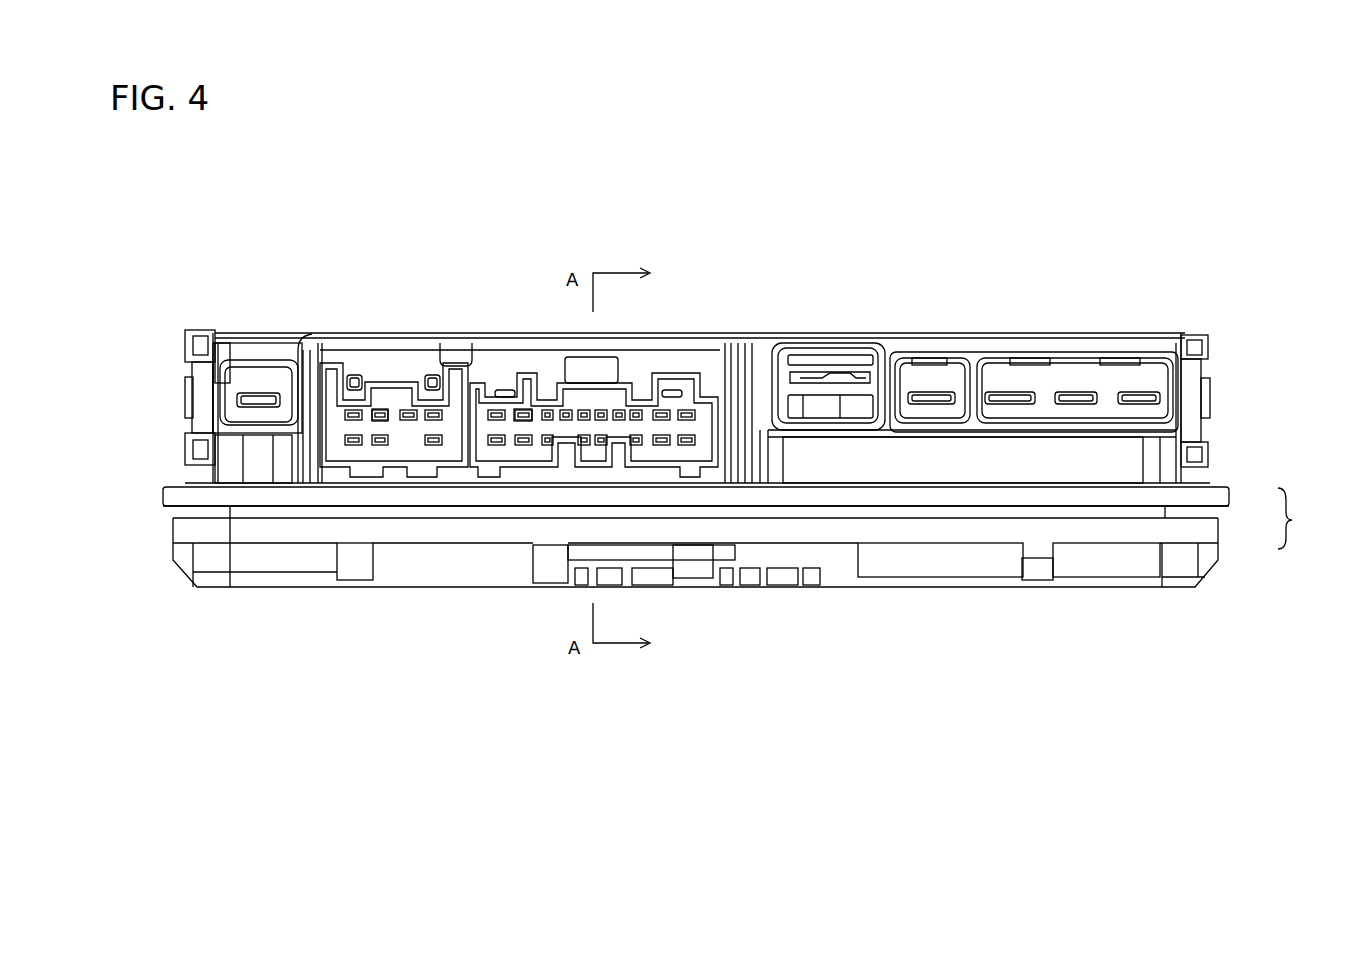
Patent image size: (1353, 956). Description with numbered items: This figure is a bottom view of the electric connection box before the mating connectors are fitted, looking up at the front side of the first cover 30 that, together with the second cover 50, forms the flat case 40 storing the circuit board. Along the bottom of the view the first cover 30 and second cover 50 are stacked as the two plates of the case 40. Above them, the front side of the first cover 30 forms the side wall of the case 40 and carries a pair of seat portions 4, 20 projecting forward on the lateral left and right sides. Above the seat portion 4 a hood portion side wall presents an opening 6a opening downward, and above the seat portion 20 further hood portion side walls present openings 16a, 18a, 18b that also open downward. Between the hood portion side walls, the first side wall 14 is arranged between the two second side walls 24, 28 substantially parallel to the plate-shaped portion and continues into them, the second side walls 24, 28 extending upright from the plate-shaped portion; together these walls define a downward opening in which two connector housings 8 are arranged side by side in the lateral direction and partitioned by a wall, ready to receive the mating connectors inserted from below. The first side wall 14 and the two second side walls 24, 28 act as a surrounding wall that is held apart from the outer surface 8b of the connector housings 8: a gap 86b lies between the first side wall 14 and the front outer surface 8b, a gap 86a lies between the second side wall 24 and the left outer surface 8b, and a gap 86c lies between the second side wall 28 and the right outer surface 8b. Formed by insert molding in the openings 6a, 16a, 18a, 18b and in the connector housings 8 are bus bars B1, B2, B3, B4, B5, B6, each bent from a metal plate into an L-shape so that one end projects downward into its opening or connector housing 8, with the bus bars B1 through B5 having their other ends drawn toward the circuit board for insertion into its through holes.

The seat portion 4 is at (232, 466).
The opening 6a is at (253, 345).
The connector housing 8 is at (519, 470).
The outer surface 8b is at (300, 418).
The first side wall 14 is at (657, 337).
The opening 16a is at (828, 339).
The opening 18a is at (1029, 346).
The opening 18b is at (1075, 355).
The seat portion 20 is at (1040, 462).
The second side wall 24 is at (737, 410).
The second side wall 28 is at (292, 438).
The first cover 30 is at (1200, 498).
The case 40 is at (1302, 518).
The second cover 50 is at (1200, 536).
The gap 86a is at (308, 455).
The gap 86b is at (460, 343).
The gap 86c is at (733, 408).
The bus bar B1 is at (265, 392).
The bus bar B2 is at (380, 410).
The bus bar B3 is at (521, 410).
The bus bar B4 is at (851, 375).
The bus bar B5 is at (942, 396).
The bus bar B6 is at (1078, 394).